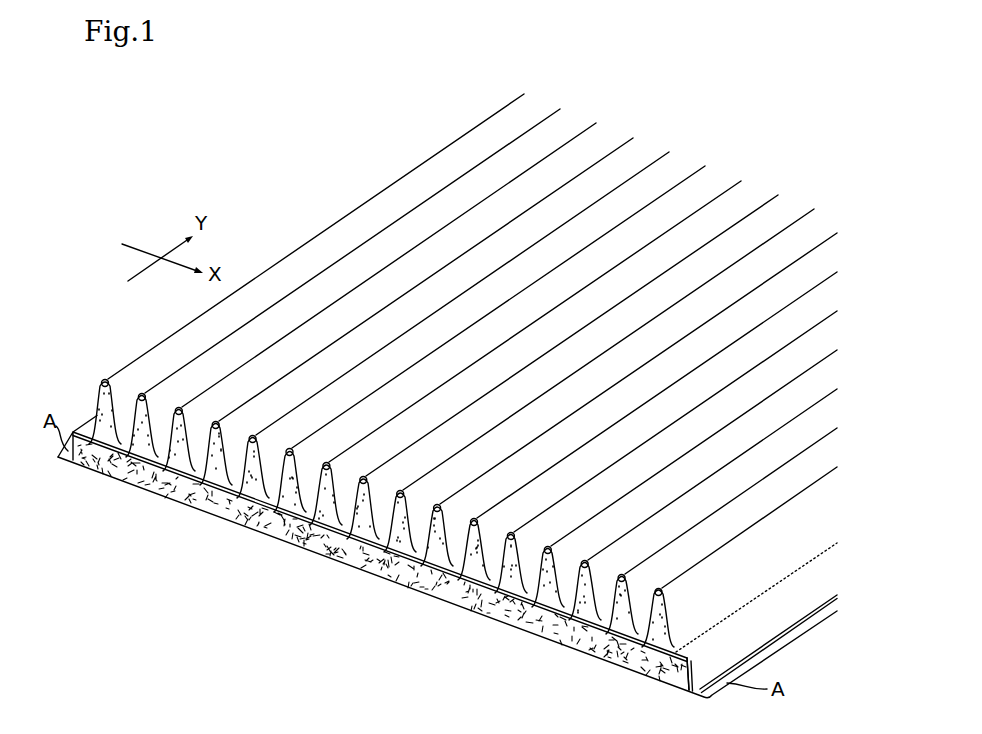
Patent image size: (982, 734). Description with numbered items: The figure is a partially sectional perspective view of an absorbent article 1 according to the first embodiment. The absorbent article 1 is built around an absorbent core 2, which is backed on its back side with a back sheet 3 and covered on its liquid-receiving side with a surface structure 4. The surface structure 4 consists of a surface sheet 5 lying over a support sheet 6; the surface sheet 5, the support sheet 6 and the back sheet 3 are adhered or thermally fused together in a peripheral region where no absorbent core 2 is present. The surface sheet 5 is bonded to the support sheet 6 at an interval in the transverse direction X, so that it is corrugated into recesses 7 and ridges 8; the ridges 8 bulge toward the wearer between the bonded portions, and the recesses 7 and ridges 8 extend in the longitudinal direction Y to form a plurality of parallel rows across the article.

The absorbent article 1 is at (350, 183).
The absorbent core 2 is at (583, 645).
The back sheet 3 is at (550, 641).
The surface structure 4 is at (86, 382).
The surface sheet 5 is at (677, 636).
The support sheet 6 is at (629, 652).
The recesses 7 is at (462, 600).
The ridges 8 is at (381, 566).